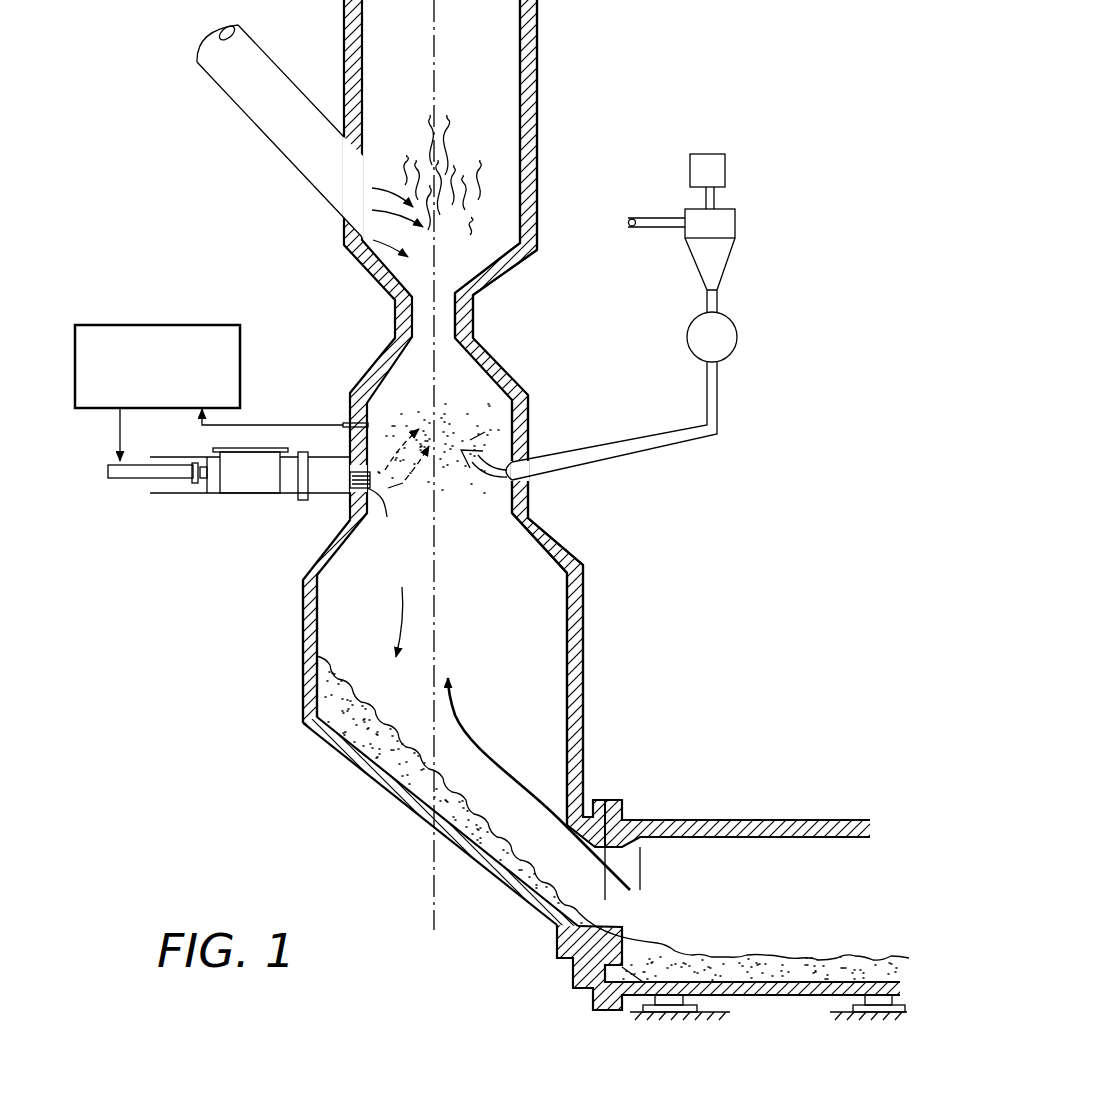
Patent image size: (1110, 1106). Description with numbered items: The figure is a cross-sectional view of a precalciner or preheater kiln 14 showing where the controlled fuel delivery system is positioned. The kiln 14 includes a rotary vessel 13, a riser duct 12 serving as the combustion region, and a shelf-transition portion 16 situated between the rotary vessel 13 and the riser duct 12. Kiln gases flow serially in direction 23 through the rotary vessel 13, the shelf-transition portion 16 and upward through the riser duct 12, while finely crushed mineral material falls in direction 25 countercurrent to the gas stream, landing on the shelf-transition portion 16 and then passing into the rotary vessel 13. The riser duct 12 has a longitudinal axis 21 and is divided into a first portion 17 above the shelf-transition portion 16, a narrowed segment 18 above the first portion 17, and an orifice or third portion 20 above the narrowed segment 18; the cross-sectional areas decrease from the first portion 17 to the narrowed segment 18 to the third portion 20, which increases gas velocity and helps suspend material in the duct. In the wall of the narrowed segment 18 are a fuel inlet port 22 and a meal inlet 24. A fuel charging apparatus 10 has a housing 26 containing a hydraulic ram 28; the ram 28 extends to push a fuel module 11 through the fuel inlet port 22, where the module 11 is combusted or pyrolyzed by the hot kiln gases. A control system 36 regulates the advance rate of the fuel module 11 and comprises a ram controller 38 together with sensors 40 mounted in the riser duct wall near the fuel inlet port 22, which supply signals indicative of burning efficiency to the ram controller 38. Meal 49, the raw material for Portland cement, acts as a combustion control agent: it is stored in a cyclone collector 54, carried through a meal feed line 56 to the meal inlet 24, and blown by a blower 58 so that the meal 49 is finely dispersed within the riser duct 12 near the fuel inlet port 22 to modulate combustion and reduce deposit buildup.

The fuel charging apparatus 10 is at (252, 496).
The fuel module 11 is at (388, 516).
The riser duct 12 is at (284, 566).
The rotary vessel 13 is at (745, 827).
The precalciner or preheater kiln 14 is at (668, 792).
The shelf-transition portion 16 is at (360, 770).
The first portion 17 is at (303, 667).
The narrowed segment 18 is at (560, 497).
The orifice or third portion 20 is at (492, 325).
The longitudinal axis 21 is at (436, 908).
The fuel inlet port 22 is at (348, 470).
The kiln gas flow direction 23 is at (485, 745).
The meal inlet 24 is at (513, 470).
The mineral material flow direction 25 is at (392, 620).
The housing 26 is at (187, 493).
The hydraulic ram 28 is at (130, 478).
The control system 36 is at (193, 307).
The ram controller 38 is at (75, 355).
The sensors 40 is at (368, 424).
The meal 49 is at (456, 499).
The cyclone collector 54 is at (698, 248).
The meal feed line 56 is at (598, 452).
The blower 58 is at (712, 352).